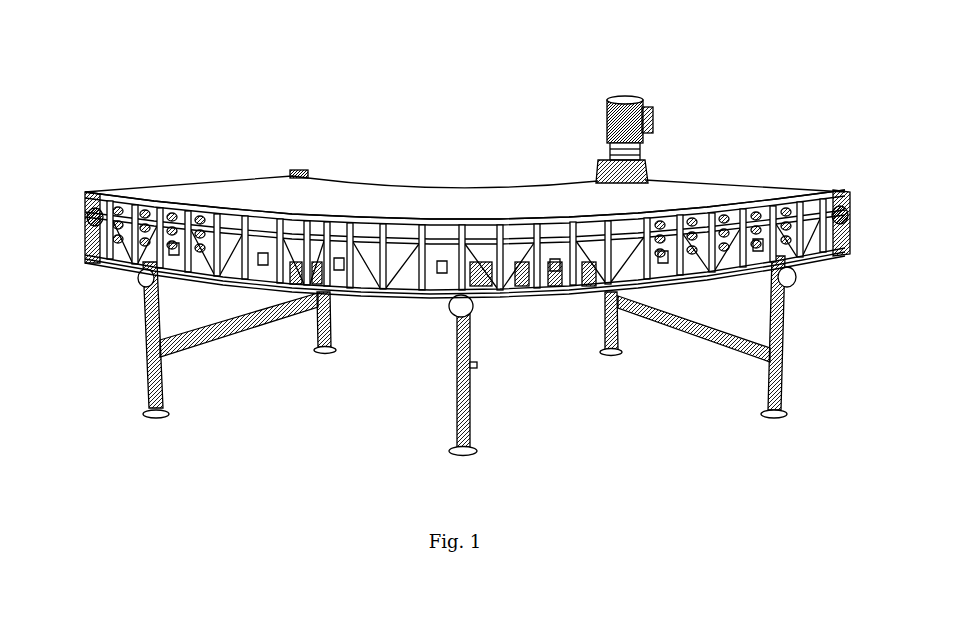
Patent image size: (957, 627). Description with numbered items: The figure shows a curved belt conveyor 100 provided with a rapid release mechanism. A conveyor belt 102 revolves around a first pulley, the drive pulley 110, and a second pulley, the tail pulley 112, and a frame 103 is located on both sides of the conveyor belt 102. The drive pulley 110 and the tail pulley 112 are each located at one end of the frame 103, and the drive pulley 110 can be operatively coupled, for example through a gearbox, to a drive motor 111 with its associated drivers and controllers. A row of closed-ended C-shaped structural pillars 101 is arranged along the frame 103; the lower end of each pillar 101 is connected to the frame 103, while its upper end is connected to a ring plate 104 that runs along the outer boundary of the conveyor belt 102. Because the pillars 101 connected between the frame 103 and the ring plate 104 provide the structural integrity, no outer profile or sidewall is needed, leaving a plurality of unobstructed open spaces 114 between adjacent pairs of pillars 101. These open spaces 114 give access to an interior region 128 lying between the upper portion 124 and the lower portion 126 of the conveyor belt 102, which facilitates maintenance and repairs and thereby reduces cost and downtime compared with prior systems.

The curved belt conveyor 100 is at (462, 276).
The closed-ended C-shaped structural pillar 101 is at (387, 277).
The conveyor belt 102 is at (340, 200).
The frame 103 is at (118, 270).
The ring plate 104 is at (800, 197).
The drive pulley 110 is at (847, 237).
The drive motor 111 is at (617, 98).
The tail pulley 112 is at (86, 233).
The unobstructed open spaces 114 is at (330, 273).
The upper portion of the conveyor belt 124 is at (443, 200).
The lower portion of the conveyor belt 126 is at (198, 268).
The interior region 128 is at (483, 277).